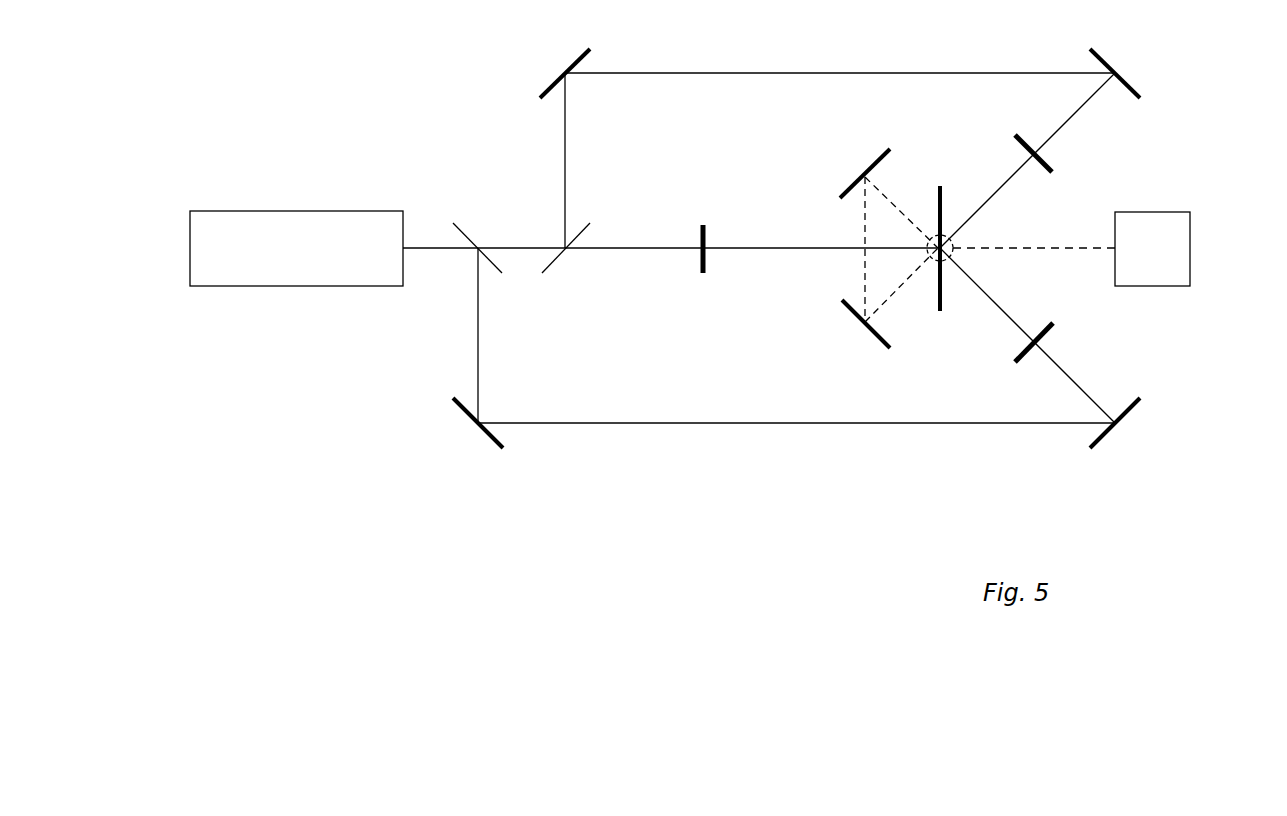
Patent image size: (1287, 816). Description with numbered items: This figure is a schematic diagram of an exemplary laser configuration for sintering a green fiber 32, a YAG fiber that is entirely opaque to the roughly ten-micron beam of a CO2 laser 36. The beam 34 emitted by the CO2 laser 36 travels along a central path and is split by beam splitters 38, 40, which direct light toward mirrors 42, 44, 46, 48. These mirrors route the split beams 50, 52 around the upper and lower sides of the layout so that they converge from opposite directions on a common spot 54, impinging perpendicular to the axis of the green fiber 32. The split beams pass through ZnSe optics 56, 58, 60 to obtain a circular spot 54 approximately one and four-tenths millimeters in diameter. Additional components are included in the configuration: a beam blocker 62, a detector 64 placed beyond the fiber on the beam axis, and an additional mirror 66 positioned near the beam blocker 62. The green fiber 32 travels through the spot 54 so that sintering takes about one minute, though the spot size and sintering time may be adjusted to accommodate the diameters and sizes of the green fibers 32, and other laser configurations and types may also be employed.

The green fiber 32 is at (938, 292).
The beam 34 is at (462, 250).
The CO2 laser 36 is at (333, 210).
The beam splitter 38 is at (458, 228).
The beam splitter 40 is at (550, 263).
The mirror 42 is at (466, 413).
The mirror 44 is at (1130, 417).
The mirror 46 is at (583, 53).
The mirror 48 is at (1125, 80).
The split beam 50 is at (750, 425).
The split beam 52 is at (905, 72).
The common spot 54 is at (948, 252).
The ZnSe optic 56 is at (698, 273).
The ZnSe optic 58 is at (1015, 362).
The ZnSe optic 60 is at (1015, 135).
The beam blocker 62 is at (873, 162).
The detector 64 is at (1190, 243).
The additional mirror 66 is at (873, 333).